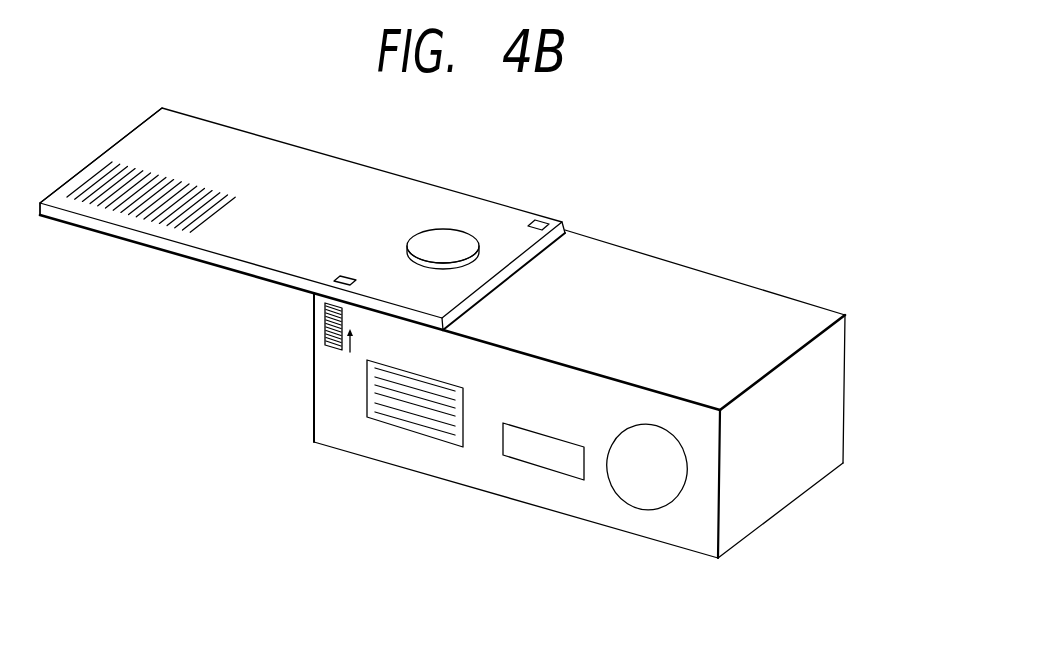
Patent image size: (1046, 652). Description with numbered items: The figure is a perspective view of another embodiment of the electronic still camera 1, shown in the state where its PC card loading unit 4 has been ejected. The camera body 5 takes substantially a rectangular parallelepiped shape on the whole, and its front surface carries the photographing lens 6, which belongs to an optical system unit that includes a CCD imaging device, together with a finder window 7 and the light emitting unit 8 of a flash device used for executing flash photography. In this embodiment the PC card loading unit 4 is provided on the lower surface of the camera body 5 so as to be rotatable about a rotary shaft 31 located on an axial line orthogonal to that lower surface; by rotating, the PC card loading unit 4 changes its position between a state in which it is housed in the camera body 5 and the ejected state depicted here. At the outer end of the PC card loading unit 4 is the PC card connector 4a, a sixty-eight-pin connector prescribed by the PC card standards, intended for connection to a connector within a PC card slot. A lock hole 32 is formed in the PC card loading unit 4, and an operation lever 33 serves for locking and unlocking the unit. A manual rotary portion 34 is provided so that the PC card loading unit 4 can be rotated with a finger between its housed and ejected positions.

The electronic still camera 1 is at (606, 198).
The PC card loading unit 4 is at (367, 180).
The PC card connector 4a is at (97, 158).
The camera body 5 is at (658, 282).
The photographing lens 6 is at (648, 497).
The finder window 7 is at (545, 458).
The light emitting unit 8 is at (397, 417).
The rotary shaft 31 is at (457, 237).
The lock hole 32 is at (334, 280).
The operation lever 33 is at (327, 333).
The manual rotary portion 34 is at (137, 172).